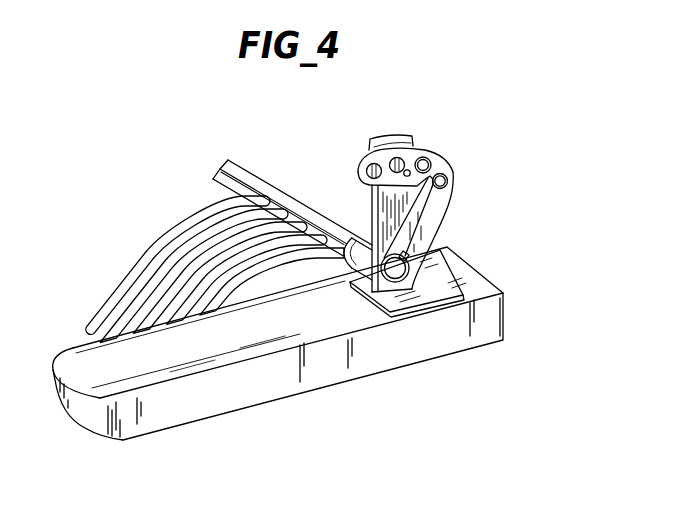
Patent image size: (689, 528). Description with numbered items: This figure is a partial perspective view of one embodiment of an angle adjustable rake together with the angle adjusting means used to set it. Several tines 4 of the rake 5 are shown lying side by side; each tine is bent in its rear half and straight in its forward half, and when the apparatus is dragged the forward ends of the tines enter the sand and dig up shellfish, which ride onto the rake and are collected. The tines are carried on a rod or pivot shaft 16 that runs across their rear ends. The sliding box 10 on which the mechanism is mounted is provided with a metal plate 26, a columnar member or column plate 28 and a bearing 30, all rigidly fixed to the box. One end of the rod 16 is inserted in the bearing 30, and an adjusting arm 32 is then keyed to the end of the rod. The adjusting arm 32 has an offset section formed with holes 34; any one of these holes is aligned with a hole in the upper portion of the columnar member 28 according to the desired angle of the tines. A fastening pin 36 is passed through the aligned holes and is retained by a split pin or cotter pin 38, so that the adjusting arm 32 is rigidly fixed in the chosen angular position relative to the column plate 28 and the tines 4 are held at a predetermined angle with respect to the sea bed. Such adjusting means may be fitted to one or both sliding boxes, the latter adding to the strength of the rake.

The tines 4 is at (124, 279).
The rake 5 is at (171, 223).
The base block 10 is at (333, 370).
The rod or pivot shaft 16 is at (284, 193).
The metal plate 26 is at (482, 274).
The columnar member or plate 28 is at (408, 143).
The bearing 30 is at (356, 236).
The adjusting arm 32 is at (441, 215).
The holes 34 is at (447, 180).
The pin 36 is at (441, 158).
The split pin (cotter pin) 38 is at (393, 162).